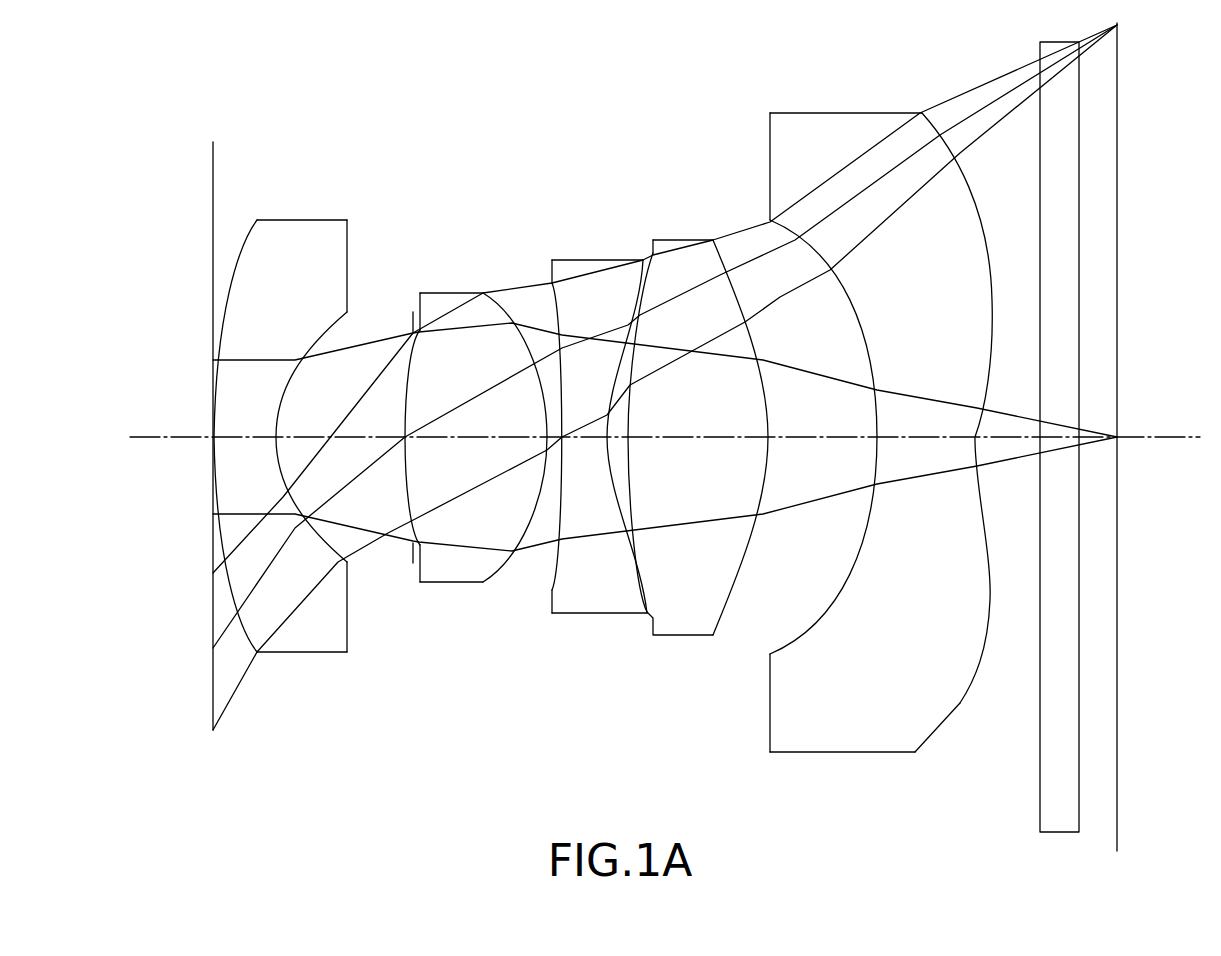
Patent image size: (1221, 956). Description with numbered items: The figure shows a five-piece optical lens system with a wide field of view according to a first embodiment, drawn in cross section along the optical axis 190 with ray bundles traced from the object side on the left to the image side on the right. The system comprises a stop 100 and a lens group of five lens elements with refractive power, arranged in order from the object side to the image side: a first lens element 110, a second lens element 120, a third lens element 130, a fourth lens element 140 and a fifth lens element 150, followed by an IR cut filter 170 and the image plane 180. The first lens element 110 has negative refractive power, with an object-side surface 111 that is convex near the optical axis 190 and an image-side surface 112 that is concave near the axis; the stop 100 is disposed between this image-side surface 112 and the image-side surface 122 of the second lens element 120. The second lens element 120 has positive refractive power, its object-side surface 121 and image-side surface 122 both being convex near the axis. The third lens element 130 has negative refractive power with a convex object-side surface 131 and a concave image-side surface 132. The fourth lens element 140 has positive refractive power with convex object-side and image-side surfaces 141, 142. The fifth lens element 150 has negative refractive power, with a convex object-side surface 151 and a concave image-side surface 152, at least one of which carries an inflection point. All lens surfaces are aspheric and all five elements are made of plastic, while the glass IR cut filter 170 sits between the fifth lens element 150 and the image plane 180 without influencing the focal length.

The stop 100 is at (413, 312).
The first lens element 110 is at (280, 454).
The object-side surface of the first lens element 111 is at (252, 643).
The image-side surface of the first lens element 112 is at (302, 563).
The second lens element 120 is at (459, 425).
The object-side surface of the second lens element 121 is at (407, 500).
The image-side surface of the second lens element 122 is at (530, 523).
The third lens element 130 is at (579, 423).
The object-side surface of the third lens element 131 is at (558, 562).
The image-side surface of the third lens element 132 is at (622, 548).
The fourth lens element 140 is at (708, 432).
The object-side surface of the fourth lens element 141 is at (641, 565).
The image-side surface of the fourth lens element 142 is at (749, 538).
The fifth lens element 150 is at (888, 424).
The object-side surface of the fifth lens element 151 is at (820, 615).
The image-side surface of the fifth lens element 152 is at (960, 703).
The IR cut filter 170 is at (1033, 224).
The image plane 180 is at (1127, 153).
The optical axis 190 is at (172, 434).